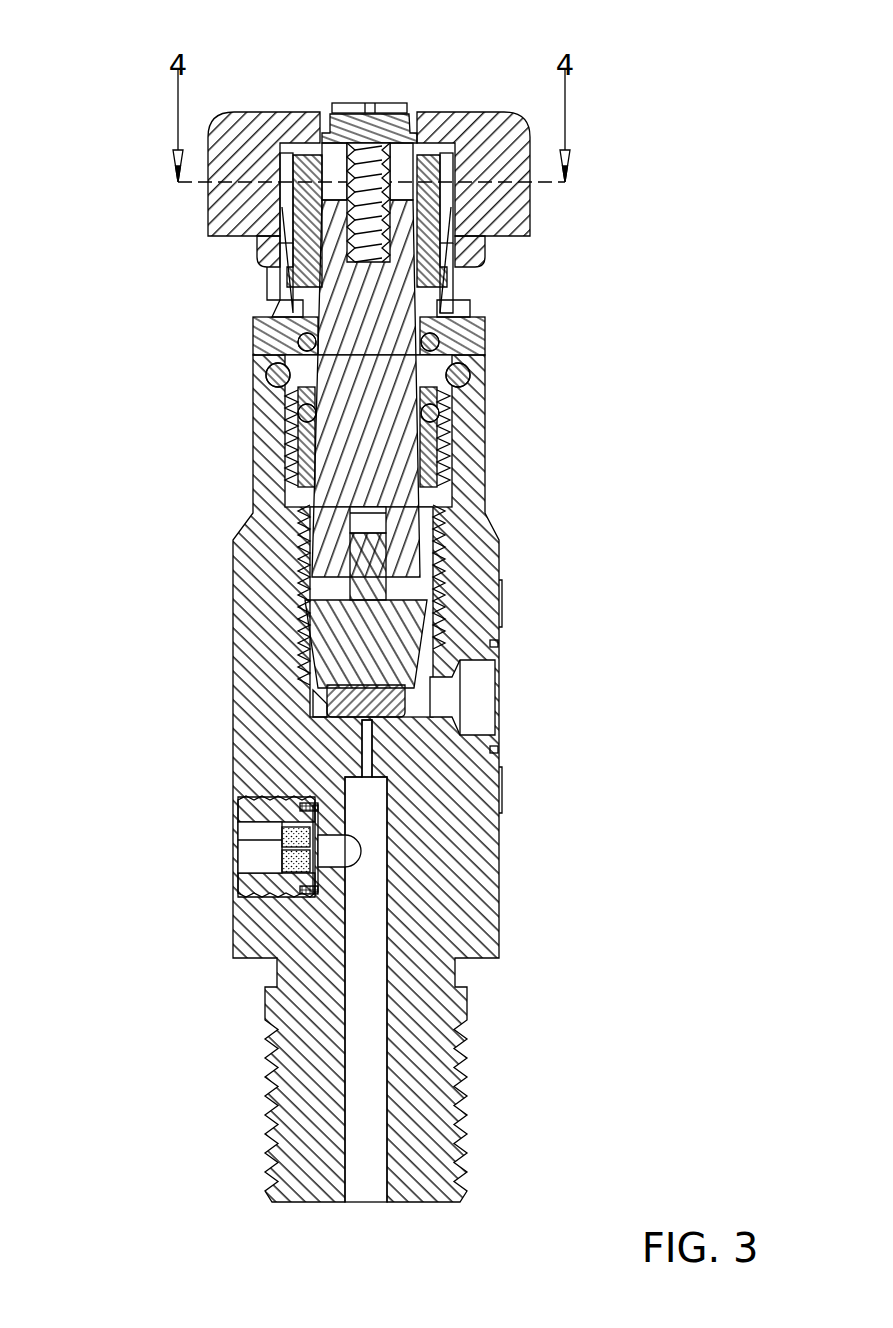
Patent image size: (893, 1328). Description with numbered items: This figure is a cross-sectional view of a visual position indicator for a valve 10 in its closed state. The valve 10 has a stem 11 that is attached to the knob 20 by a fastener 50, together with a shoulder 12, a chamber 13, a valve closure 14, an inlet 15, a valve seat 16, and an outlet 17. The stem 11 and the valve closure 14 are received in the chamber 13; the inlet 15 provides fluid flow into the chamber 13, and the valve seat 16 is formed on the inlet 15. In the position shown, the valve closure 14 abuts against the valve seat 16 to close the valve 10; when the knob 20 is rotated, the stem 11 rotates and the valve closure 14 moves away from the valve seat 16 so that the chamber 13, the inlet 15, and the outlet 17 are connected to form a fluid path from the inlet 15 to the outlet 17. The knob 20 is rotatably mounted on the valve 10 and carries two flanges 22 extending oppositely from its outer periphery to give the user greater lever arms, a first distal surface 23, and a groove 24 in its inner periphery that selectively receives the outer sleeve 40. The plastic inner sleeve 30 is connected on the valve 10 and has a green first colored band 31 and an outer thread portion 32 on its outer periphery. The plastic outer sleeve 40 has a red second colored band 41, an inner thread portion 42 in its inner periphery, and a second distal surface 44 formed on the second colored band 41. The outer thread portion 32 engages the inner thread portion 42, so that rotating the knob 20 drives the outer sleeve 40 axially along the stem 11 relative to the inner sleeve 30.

The valve 10 is at (165, 475).
The stem 11 is at (335, 392).
The shoulder 12 is at (272, 340).
The chamber 13 is at (310, 705).
The valve closure 14 is at (335, 610).
The inlet 15 is at (372, 1107).
The valve seat 16 is at (345, 722).
The outlet 17 is at (480, 688).
The knob 20 is at (493, 98).
The flanges 22 is at (232, 145).
The first distal surface 23 is at (480, 265).
The groove 24 is at (462, 160).
The inner sleeve 30 is at (464, 303).
The first colored band 31 is at (300, 305).
The outer thread portion 32 is at (292, 232).
The outer sleeve 40 is at (250, 275).
The second colored band 41 is at (280, 290).
The inner thread portion 42 is at (440, 215).
The second distal surface 44 is at (480, 318).
The fastener 50 is at (390, 125).